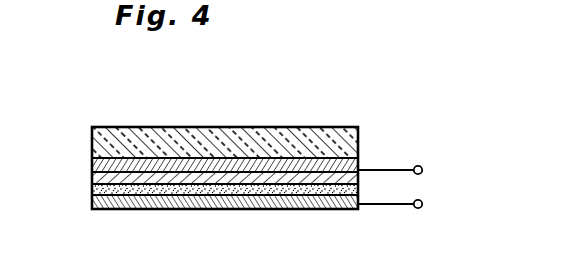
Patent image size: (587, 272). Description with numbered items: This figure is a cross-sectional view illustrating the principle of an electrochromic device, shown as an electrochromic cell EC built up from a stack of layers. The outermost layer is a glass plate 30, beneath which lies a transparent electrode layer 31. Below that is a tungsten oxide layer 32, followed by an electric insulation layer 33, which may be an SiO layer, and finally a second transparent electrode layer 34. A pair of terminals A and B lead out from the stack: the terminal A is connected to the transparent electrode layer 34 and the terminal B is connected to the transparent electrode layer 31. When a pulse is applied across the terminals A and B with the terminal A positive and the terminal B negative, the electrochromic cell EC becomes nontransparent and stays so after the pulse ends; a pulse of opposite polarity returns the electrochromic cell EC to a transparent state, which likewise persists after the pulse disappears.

The glass plate 30 is at (92, 147).
The transparent electrode layer 31 is at (92, 163).
The tungsten oxide layer 32 is at (92, 180).
The electric insulation layer 33 is at (92, 192).
The transparent electrode layer 34 is at (92, 204).
The electrochromic cell EC is at (301, 114).
The terminal A is at (401, 205).
The terminal B is at (401, 171).